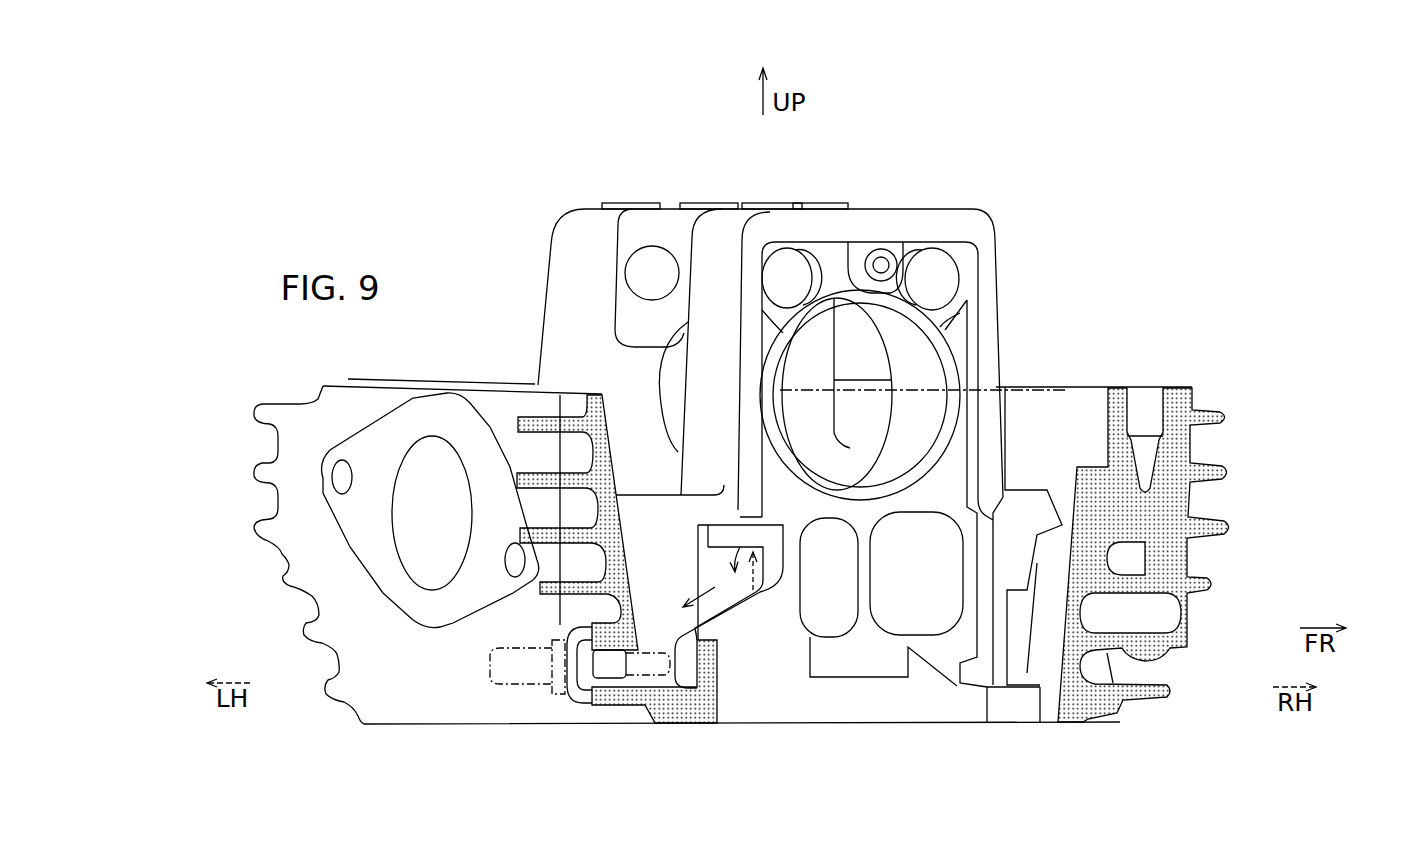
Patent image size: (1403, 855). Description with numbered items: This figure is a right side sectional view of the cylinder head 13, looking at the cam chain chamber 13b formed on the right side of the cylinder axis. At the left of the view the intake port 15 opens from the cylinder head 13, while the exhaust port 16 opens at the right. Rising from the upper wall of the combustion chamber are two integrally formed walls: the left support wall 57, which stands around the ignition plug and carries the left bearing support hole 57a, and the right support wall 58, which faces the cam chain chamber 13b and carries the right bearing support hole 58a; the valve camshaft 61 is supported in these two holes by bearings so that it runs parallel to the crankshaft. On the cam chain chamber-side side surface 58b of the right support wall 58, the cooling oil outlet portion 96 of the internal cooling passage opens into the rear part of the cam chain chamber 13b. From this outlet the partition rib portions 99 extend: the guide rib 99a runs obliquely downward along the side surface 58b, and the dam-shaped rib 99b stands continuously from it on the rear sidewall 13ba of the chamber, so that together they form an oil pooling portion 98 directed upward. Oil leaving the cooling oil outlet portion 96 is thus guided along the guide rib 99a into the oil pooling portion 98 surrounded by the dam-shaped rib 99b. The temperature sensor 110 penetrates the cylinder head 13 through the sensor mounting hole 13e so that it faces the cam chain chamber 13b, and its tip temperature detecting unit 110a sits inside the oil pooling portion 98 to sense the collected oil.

The cylinder head 13 is at (1026, 249).
The cam chain chamber 13b is at (880, 711).
The rear sidewall of the cam chain chamber 13ba is at (730, 701).
The sensor mounting hole 13e is at (642, 638).
The intake port 15 is at (473, 512).
The exhaust port 16 is at (1152, 557).
The left support wall 57 is at (540, 242).
The left bearing support hole 57a is at (675, 330).
The right support wall 58 is at (987, 240).
The right bearing support hole 58a is at (808, 328).
The cam chain chamber-side side surface 58b is at (805, 514).
The valve camshaft 61 is at (1035, 385).
The cooling oil outlet portion 96 is at (757, 590).
The oil pooling portion 98 is at (681, 674).
The partition rib portions 99 is at (758, 673).
The guide rib 99a is at (727, 610).
The dam-shaped rib 99b is at (720, 657).
The temperature sensor 110 is at (552, 692).
The tip temperature detecting unit 110a is at (633, 717).